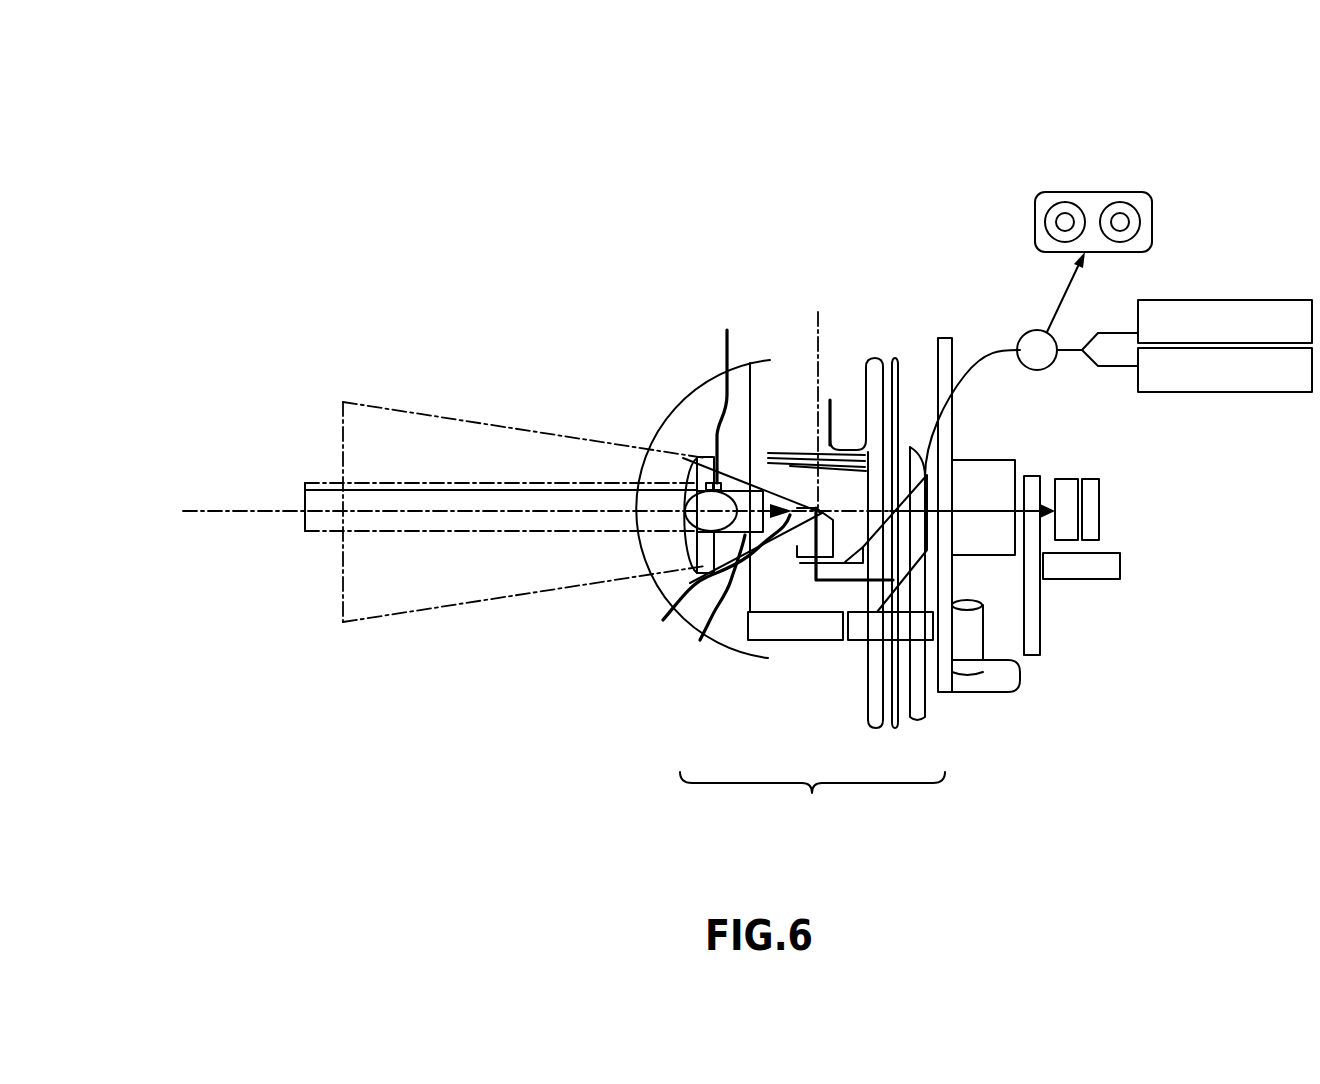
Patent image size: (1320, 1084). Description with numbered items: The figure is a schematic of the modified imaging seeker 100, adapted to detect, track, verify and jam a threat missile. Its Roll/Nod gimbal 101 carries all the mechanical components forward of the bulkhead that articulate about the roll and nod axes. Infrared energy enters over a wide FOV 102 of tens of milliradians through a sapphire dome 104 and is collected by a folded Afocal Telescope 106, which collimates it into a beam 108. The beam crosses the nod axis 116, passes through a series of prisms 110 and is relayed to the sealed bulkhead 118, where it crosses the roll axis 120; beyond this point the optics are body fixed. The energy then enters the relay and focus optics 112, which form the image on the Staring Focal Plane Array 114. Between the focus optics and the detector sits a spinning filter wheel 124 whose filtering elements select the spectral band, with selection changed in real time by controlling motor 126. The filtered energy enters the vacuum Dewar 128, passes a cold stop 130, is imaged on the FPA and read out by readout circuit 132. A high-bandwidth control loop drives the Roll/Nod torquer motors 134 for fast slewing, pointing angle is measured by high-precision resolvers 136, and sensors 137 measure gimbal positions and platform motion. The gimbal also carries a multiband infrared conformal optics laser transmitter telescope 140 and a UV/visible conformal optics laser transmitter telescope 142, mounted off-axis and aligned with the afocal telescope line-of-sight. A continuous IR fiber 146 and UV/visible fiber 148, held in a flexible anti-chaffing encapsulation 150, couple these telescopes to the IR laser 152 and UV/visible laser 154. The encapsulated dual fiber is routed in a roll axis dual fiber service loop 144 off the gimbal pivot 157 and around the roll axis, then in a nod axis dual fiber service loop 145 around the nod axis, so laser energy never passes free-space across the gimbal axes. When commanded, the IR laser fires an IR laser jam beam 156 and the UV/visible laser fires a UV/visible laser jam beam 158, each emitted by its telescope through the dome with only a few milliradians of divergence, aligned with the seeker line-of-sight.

The AIM-9X Imaging Seeker 100 is at (612, 836).
The Roll/Nod gimbal 101 is at (812, 800).
The wide FOV 102 is at (455, 420).
The dome 104 is at (700, 395).
The folded Afocal Telescope 106 is at (702, 457).
The beam 108 is at (710, 605).
The prisms 110 is at (832, 586).
The relay and focus optics 112 is at (992, 558).
The Staring Focal Plane Array 114 is at (1057, 478).
The nod axis 116 is at (813, 373).
The sealed bulkhead 118 is at (948, 378).
The roll axis 120 is at (910, 447).
The spinning filter wheel 124 is at (1043, 593).
The motor 126 is at (1120, 566).
The vacuum Dewar 128 is at (1155, 509).
The cold stop 130 is at (1051, 478).
The readout circuit 132 is at (1100, 492).
The Roll/Nod torquer motors 134 is at (865, 642).
The resolvers 136 is at (786, 642).
The sensors 137 is at (1022, 676).
The multiband infrared conformal optics laser transmitter telescope 140 is at (709, 582).
The UV/visible conformal optics laser transmitter telescope 142 is at (721, 395).
The roll axis dual fiber service loop 144 is at (922, 712).
The nod axis dual fiber service loop 145 is at (832, 432).
The IR fiber 146 is at (1150, 216).
The UV/visible fiber 148 is at (1035, 215).
The flexible anti-chaffing/entanglement encapsulation 150 is at (1090, 191).
The IR laser 152 is at (1265, 393).
The UV/visible laser 154 is at (1243, 300).
The IR laser jam beam 156 is at (318, 535).
The gimbal pivot 157 is at (205, 511).
The UV/visible laser jam beam 158 is at (318, 482).